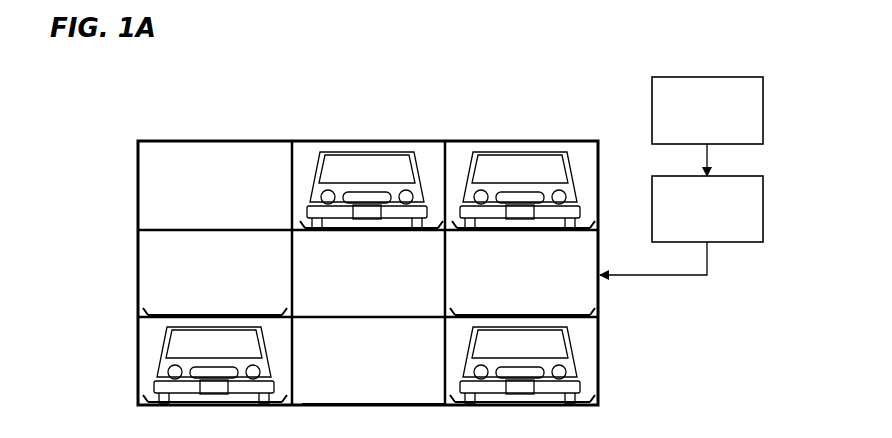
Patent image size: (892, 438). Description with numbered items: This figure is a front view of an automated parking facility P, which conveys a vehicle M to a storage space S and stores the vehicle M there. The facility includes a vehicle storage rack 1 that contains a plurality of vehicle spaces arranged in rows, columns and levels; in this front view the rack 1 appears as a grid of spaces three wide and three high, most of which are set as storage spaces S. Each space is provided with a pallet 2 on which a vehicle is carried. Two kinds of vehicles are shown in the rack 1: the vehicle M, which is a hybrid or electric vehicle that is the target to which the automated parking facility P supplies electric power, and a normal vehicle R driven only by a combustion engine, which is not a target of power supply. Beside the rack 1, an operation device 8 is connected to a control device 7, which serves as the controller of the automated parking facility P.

The vehicle storage rack 1 is at (136, 195).
The pallet 2 is at (190, 313).
The storage space S is at (215, 187).
The normal vehicle R is at (370, 150).
The vehicle M is at (162, 350).
The automated parking facility P is at (247, 85).
The control device 7 is at (738, 245).
The operation device 8 is at (709, 76).